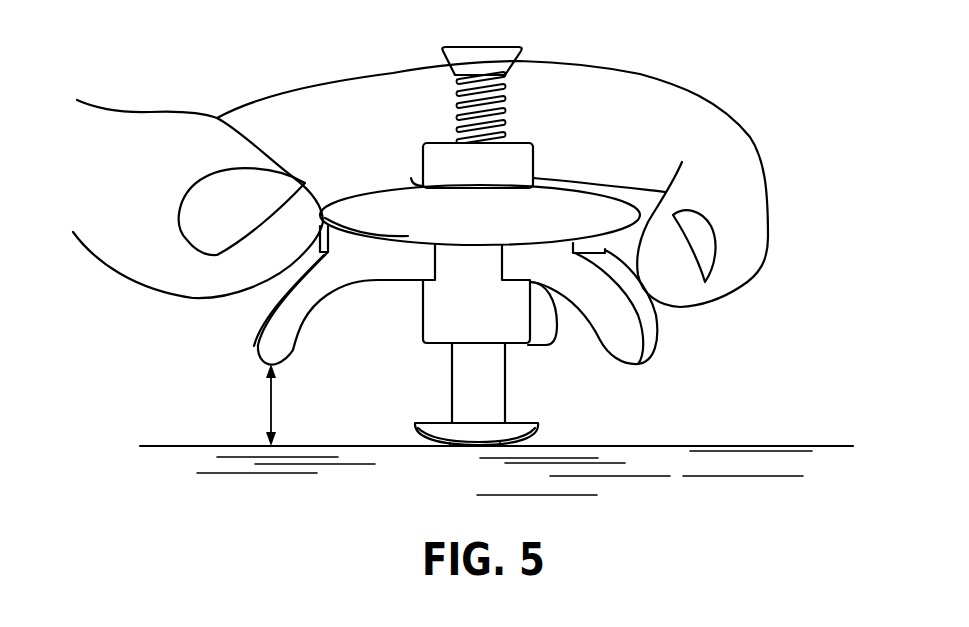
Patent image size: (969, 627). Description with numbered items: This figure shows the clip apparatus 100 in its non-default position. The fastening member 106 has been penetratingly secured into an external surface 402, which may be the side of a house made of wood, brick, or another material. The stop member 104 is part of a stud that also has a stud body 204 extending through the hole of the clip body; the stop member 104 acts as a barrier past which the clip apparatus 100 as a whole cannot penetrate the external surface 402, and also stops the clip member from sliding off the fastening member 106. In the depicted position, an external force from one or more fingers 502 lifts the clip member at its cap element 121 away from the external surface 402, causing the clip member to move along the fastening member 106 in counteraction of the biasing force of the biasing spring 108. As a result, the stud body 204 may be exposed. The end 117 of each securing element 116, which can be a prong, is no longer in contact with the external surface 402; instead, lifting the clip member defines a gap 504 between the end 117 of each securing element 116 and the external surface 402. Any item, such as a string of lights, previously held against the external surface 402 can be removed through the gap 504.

The clip apparatus 100 is at (200, 341).
The stop member 104 is at (417, 428).
The fastening member 106 is at (438, 107).
The biasing spring 108 is at (503, 92).
The securing element 116 is at (295, 307).
The end 117 is at (265, 361).
The cap element 121 is at (567, 213).
The stud body 204 is at (492, 390).
The external surface 402 is at (770, 447).
The fingers 502 is at (150, 132).
The gap 504 is at (290, 405).